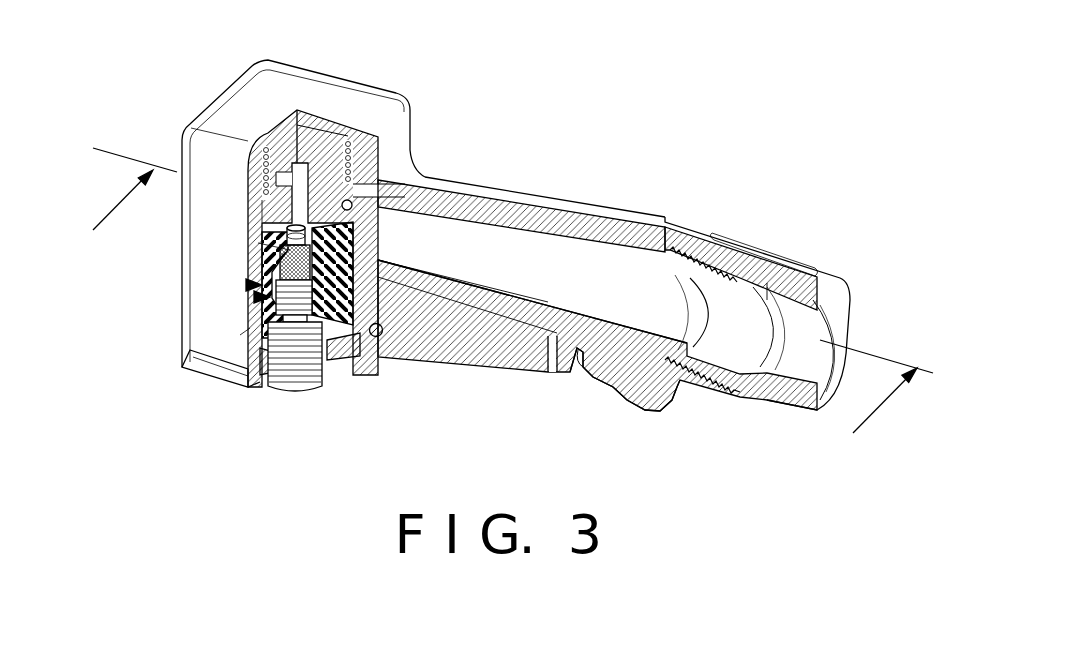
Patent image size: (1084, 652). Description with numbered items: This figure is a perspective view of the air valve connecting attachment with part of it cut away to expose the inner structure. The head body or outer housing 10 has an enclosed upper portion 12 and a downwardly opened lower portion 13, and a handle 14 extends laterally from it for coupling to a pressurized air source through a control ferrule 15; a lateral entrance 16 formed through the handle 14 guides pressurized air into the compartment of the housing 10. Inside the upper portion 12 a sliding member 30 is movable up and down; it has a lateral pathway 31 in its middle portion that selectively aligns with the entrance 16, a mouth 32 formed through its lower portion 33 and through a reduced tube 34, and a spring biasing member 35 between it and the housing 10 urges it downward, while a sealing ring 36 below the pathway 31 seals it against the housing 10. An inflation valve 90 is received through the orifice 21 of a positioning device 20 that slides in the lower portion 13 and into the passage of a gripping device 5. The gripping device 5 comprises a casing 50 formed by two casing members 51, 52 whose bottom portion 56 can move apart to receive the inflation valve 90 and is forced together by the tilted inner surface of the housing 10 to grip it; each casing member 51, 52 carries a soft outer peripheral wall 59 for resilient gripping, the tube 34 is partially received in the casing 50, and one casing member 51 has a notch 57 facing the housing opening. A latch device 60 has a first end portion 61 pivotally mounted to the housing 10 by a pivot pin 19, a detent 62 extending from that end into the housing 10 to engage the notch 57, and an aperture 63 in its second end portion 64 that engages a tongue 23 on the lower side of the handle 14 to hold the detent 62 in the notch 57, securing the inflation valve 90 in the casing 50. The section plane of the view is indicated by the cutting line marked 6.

The gripping device 5 is at (242, 334).
The section line 6 is at (507, 308).
The housing 10 is at (340, 93).
The upper portion 12 is at (205, 108).
The lower portion 13 is at (186, 364).
The handle 14 is at (603, 210).
The control ferrule 15 is at (770, 253).
The entrance 16 is at (373, 184).
The pivot pin 19 is at (395, 322).
The positioning device 20 is at (353, 348).
The orifice 21 is at (334, 350).
The tongue 23 is at (578, 370).
The sliding member 30 is at (330, 148).
The pathway 31 is at (332, 175).
The mouth 32 is at (298, 192).
The lower portion 33 is at (257, 247).
The tube 34 is at (246, 285).
The spring biasing member 35 is at (250, 188).
The sealing ring 36 is at (252, 228).
The casing 50 is at (254, 297).
The casing member 51 is at (352, 232).
The casing member 52 is at (262, 325).
The bottom portion 56 is at (365, 372).
The notch 57 is at (365, 295).
The outer peripheral wall 59 is at (272, 372).
The latch device 60 is at (523, 360).
The first end portion 61 is at (383, 337).
The detent 62 is at (383, 256).
The aperture 63 is at (552, 378).
The second end portion 64 is at (650, 407).
The inflation valve 90 is at (298, 390).